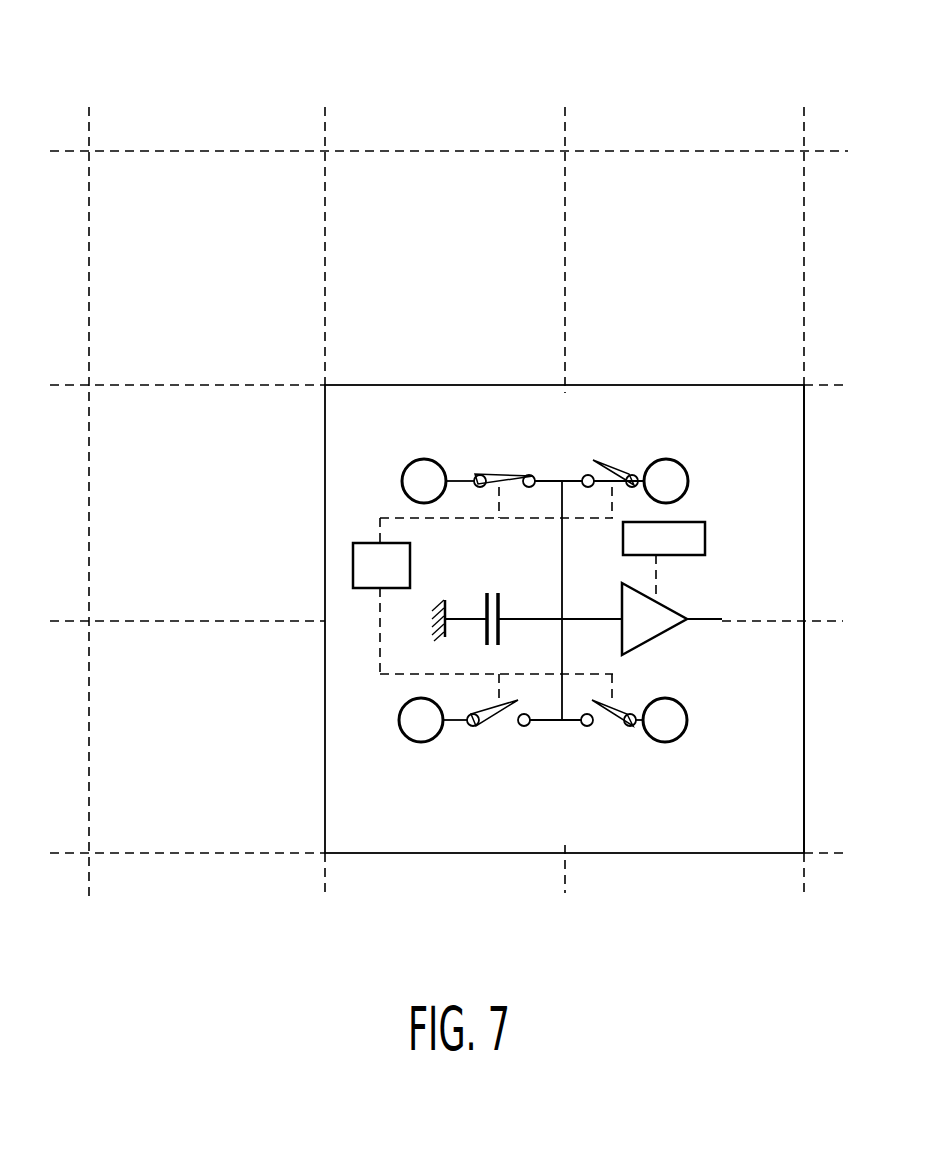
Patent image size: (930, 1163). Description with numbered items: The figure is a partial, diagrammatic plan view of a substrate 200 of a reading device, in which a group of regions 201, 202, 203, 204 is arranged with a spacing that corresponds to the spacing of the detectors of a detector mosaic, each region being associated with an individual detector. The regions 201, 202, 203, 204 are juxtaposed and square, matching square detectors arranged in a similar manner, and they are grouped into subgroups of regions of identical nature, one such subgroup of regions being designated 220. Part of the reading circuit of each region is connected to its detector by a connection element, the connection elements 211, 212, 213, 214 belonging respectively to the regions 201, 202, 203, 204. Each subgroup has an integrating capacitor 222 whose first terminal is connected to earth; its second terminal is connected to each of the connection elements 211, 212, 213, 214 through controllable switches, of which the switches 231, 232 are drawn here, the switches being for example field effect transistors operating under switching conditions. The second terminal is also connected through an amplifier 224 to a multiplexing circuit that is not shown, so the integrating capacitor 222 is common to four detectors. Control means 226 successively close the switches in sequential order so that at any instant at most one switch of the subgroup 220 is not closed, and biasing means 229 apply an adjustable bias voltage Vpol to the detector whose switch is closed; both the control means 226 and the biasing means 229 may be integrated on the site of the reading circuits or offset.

The substrate 200 is at (369, 112).
The region 201 is at (439, 392).
The region 202 is at (92, 518).
The region 203 is at (175, 158).
The region 204 is at (445, 158).
The connection element 211 is at (414, 461).
The connection element 212 is at (692, 467).
The connection element 213 is at (680, 740).
The connection element 214 is at (415, 741).
The subgroup of regions 220 is at (814, 715).
The integrating capacitor 222 is at (512, 548).
The amplifier 224 is at (658, 636).
The control means 226 is at (353, 563).
The biasing means 229 is at (705, 538).
The controllable switch 231 is at (530, 428).
The controllable switch 232 is at (640, 418).